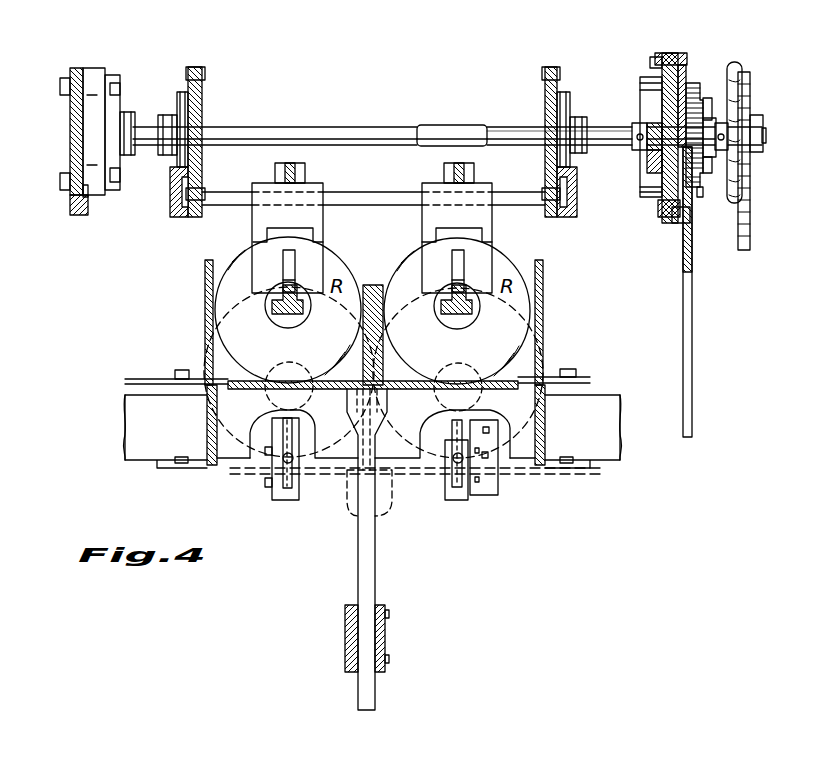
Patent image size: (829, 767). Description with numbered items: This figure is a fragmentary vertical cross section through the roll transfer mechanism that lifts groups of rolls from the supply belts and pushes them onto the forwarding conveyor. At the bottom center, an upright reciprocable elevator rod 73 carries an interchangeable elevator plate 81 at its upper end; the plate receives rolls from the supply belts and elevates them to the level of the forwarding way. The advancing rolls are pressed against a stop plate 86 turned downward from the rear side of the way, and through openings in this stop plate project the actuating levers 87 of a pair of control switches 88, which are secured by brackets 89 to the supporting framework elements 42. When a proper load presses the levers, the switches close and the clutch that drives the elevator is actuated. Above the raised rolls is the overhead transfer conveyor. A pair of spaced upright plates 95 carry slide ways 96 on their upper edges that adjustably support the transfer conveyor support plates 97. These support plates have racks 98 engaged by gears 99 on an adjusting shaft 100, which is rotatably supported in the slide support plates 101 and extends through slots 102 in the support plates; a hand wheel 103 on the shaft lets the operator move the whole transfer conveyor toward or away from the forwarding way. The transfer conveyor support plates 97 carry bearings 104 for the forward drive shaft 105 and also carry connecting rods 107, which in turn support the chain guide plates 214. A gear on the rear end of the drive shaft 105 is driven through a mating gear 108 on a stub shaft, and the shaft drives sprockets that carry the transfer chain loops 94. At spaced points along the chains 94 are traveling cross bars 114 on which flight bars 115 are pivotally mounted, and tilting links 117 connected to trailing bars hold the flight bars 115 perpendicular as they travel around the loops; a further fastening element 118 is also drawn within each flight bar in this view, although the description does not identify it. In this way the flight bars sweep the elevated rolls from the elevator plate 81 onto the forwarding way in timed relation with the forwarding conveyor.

The forward drive shaft 105 is at (302, 125).
The connecting rods 107 is at (460, 124).
The adjusting shaft 100 is at (498, 125).
The transfer conveyor support plates 97 is at (70, 137).
The bearings 104 is at (100, 70).
The slide ways 96 is at (90, 207).
The chain guide plates 214 is at (205, 103).
The chains 94 is at (205, 75).
The traveling cross bars 114 is at (392, 196).
The flight bars 115 is at (315, 257).
The tilting links 117 is at (465, 175).
The fastener 118 is at (266, 305).
The elevator plate 81 is at (505, 383).
The supporting framework elements 42 is at (226, 463).
The stop plate 86 is at (520, 455).
The elevator rod 73 is at (366, 568).
The control switches 88 is at (292, 500).
The actuating levers 87 is at (454, 452).
The brackets 89 is at (490, 497).
The gears 99 is at (640, 148).
The slots 102 is at (658, 112).
The racks 98 is at (648, 172).
The mating gear 108 is at (700, 194).
The slide support plates 101 is at (680, 226).
The upright plates 95 is at (692, 392).
The hand wheel 103 is at (733, 207).